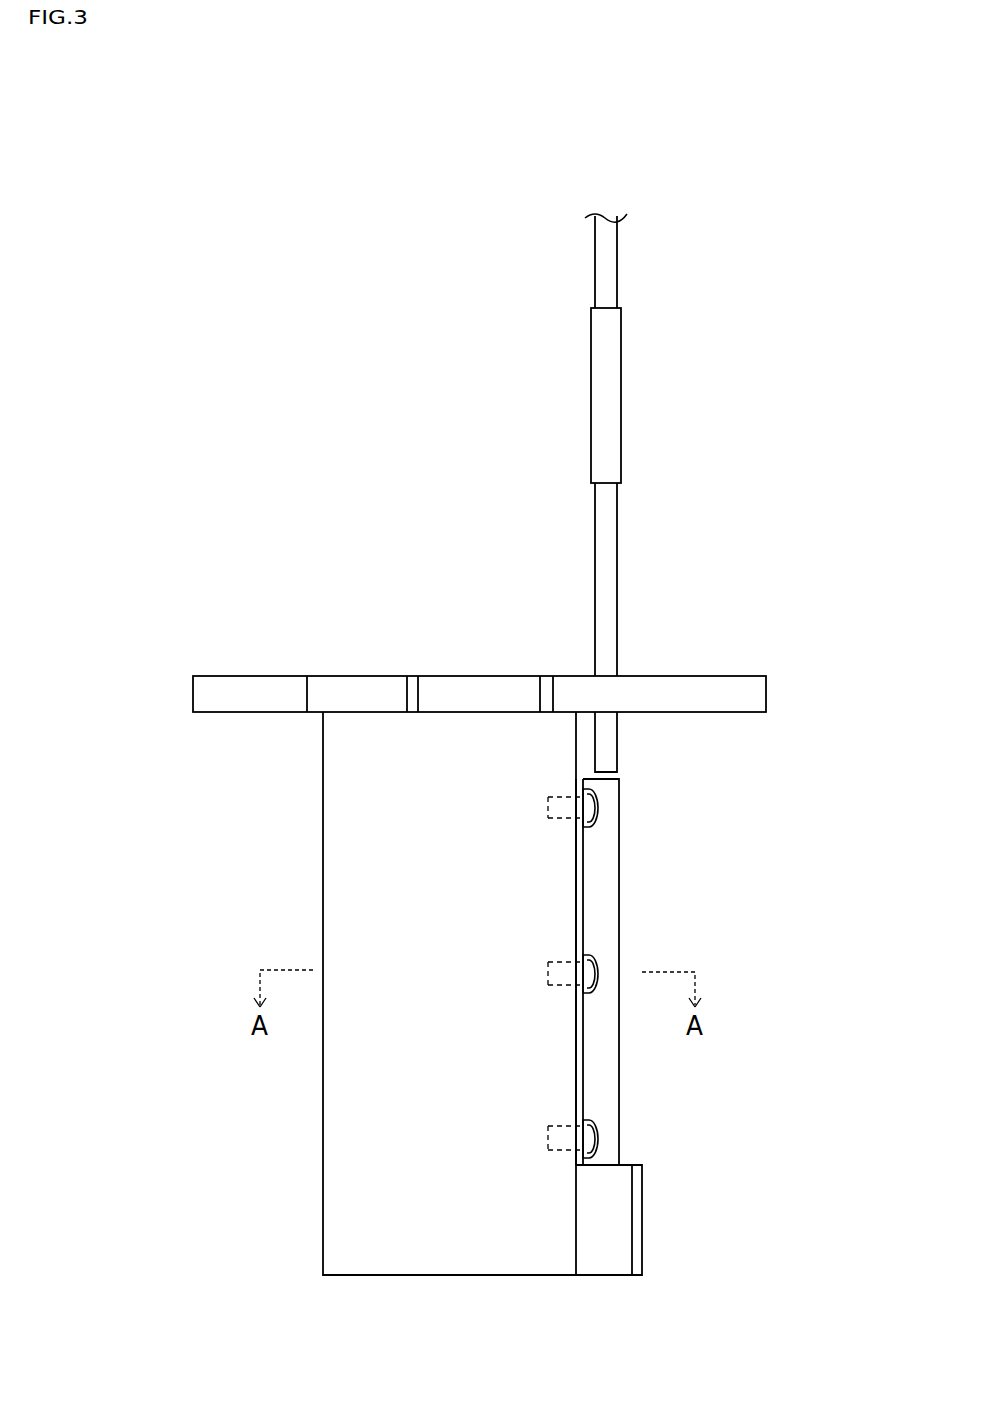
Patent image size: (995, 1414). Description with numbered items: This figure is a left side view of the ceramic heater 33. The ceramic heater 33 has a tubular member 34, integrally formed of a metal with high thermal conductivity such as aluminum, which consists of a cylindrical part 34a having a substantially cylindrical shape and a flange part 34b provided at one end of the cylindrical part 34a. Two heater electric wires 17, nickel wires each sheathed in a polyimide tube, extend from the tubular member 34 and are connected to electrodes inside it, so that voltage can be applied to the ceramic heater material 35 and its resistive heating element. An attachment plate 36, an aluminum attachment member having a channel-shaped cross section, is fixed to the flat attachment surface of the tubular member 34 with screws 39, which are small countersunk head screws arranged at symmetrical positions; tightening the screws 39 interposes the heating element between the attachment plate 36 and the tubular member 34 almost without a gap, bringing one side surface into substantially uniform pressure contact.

The heater electric wire 17 is at (609, 374).
The ceramic heater 33 is at (235, 608).
The tubular member 34 is at (322, 910).
The cylindrical part 34a is at (477, 1233).
The flange part 34b is at (750, 700).
The ceramic heater material 35 is at (602, 1073).
The attachment plate 36 is at (612, 868).
The screw 39 is at (598, 812).